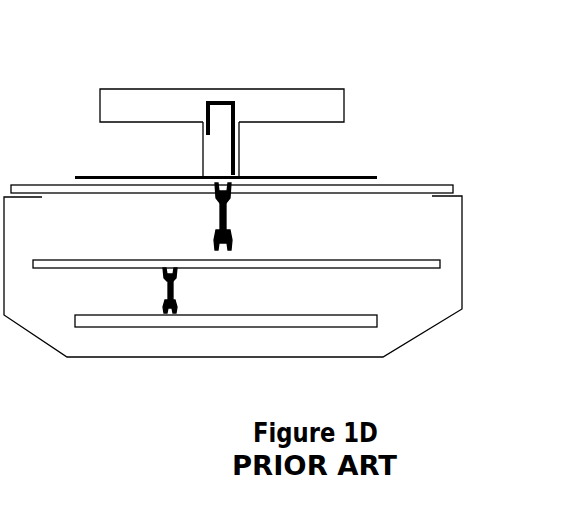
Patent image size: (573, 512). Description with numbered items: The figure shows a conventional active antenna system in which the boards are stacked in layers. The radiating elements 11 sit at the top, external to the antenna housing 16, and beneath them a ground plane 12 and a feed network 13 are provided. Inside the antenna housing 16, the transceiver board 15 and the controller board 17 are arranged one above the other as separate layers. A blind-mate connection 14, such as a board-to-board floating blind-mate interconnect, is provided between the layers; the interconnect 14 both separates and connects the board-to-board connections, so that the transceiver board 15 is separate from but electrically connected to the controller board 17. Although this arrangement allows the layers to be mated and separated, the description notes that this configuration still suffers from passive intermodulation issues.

The radiating elements 11 is at (320, 102).
The ground plane 12 is at (337, 172).
The feed network 13 is at (393, 181).
The blind-mate connection 14 is at (240, 227).
The transceiver board 15 is at (269, 273).
The antenna housing 16 is at (257, 363).
The controller board 17 is at (203, 333).